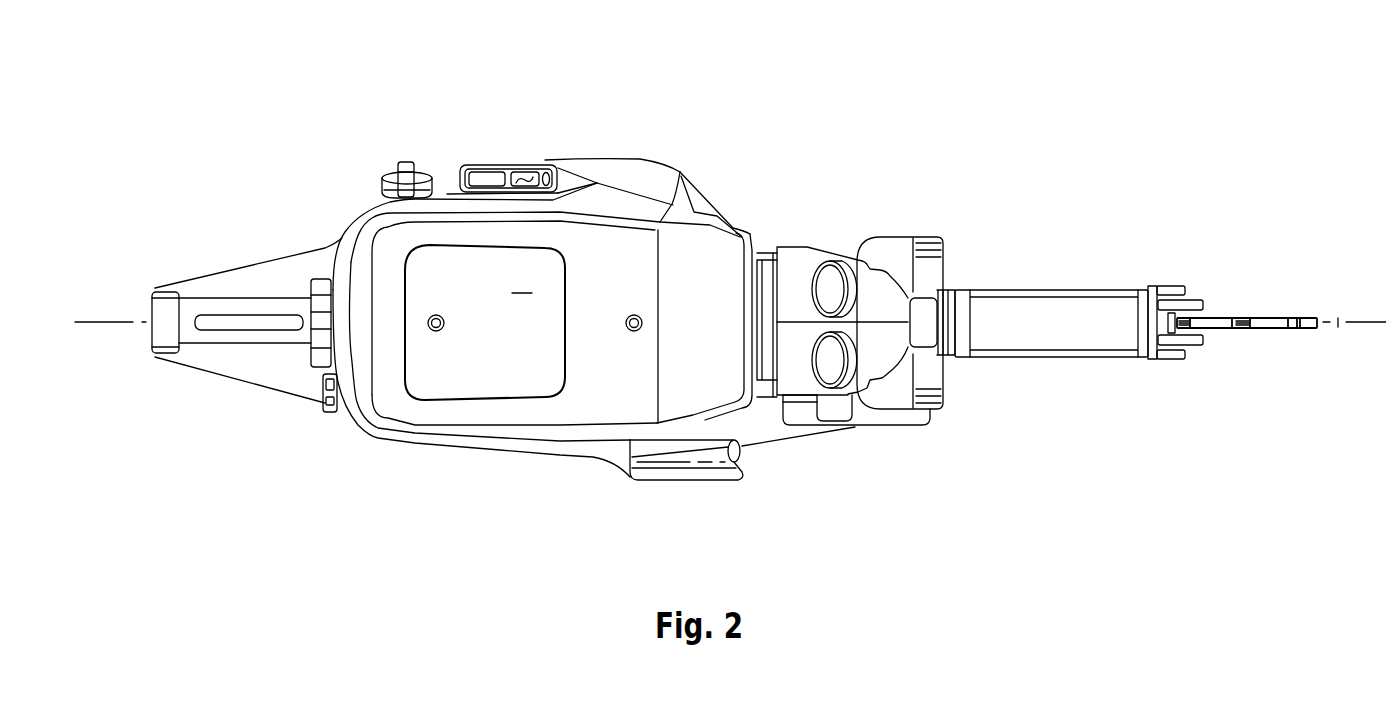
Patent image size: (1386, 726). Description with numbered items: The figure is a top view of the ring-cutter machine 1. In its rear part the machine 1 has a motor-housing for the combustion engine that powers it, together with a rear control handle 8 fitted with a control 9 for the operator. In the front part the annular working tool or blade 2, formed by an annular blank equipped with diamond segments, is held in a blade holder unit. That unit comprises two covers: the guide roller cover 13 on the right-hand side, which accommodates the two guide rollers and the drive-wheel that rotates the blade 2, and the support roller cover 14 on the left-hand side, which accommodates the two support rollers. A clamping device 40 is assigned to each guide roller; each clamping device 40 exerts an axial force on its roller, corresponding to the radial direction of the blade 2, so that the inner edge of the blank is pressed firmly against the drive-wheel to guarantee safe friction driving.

The machine 1 is at (507, 95).
The annular working tool or blade 2 is at (1225, 318).
The rear control handle 8 is at (227, 308).
The control 9 is at (258, 316).
The guide roller cover 13 is at (802, 385).
The support roller cover 14 is at (797, 270).
The clamping device 40 is at (808, 415).